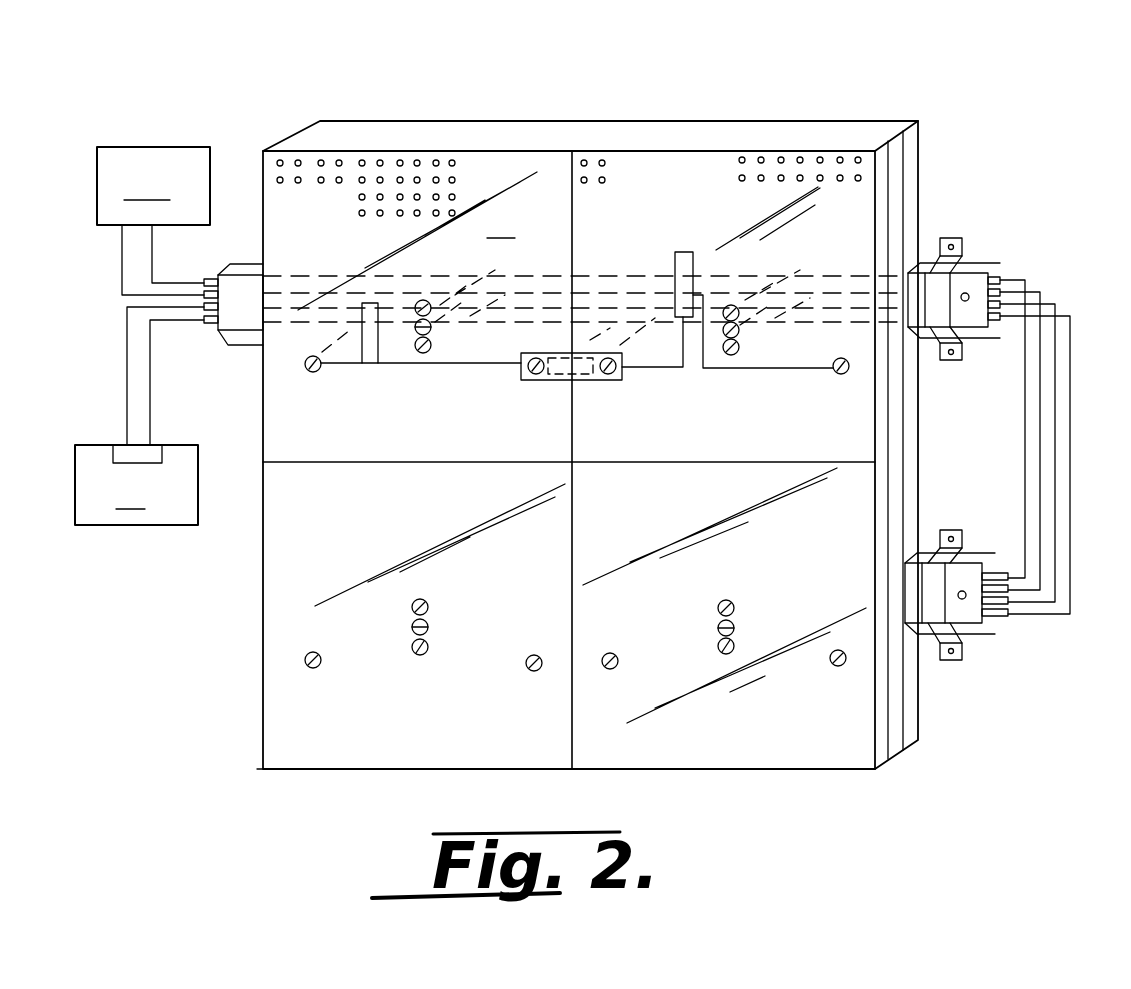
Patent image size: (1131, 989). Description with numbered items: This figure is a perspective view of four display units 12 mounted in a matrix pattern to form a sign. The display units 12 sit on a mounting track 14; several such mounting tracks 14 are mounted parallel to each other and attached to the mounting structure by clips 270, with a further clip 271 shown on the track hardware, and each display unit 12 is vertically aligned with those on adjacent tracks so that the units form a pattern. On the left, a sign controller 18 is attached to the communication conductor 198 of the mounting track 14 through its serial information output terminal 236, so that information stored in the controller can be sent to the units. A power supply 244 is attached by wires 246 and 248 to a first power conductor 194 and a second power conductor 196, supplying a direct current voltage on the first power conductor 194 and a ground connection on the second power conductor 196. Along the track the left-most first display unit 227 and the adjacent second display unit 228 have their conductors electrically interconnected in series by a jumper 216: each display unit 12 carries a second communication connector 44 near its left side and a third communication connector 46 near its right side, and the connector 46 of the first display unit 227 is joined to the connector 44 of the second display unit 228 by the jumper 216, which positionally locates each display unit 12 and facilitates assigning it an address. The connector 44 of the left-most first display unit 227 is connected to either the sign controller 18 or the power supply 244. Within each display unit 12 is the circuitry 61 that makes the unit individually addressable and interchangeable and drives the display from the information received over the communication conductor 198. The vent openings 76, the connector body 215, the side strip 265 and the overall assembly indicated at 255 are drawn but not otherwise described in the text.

The display unit 12 is at (868, 148).
The mounting track 14 is at (968, 293).
The sign controller 18 is at (136, 485).
The second communication connector 44 is at (306, 370).
The third communication connector 46 is at (528, 380).
The circuitry 61 is at (370, 303).
The vent holes 76 is at (415, 152).
The first power conductor 194 is at (210, 277).
The second power conductor 196 is at (213, 280).
The communication conductor 198 is at (204, 307).
The lower connector 215 is at (1000, 568).
The jumper 216 is at (578, 378).
The first display unit 227 is at (503, 150).
The second display unit 228 is at (850, 515).
The serial information output terminal 236 is at (123, 450).
The power supply 244 is at (153, 186).
The wire 246 is at (152, 267).
The wire 248 is at (122, 250).
The assembly 255 is at (786, 100).
The side strip 265 is at (883, 462).
The clip 270 is at (953, 240).
The mounting tab 271 is at (962, 350).